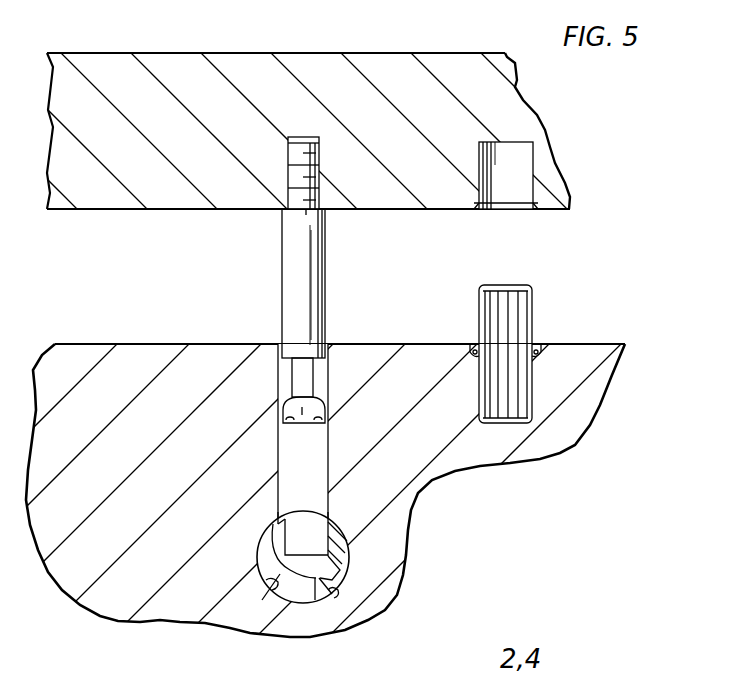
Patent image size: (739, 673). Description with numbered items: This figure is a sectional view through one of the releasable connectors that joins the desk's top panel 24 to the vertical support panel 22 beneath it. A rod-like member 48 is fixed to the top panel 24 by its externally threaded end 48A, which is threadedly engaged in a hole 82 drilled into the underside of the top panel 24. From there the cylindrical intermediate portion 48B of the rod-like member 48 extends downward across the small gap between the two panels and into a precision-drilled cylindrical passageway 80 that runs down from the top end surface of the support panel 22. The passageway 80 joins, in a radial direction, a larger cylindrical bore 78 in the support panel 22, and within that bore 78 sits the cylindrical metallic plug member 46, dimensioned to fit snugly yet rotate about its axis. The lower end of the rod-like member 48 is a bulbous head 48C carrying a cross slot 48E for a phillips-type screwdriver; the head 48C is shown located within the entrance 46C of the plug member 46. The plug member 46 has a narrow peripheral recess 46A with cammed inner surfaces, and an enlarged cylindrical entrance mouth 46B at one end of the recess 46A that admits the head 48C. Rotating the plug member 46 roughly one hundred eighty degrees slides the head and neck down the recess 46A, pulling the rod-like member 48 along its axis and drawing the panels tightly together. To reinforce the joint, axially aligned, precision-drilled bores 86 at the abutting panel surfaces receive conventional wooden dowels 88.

The support panel 22 is at (137, 350).
The top panel 24 is at (165, 185).
The plug member 46 is at (304, 573).
The recess 46A is at (267, 546).
The entrance mouth 46B is at (322, 523).
The entrance 46C is at (275, 590).
The rod-like member 48 is at (349, 308).
The threaded end 48A is at (319, 192).
The intermediate portion 48B is at (313, 262).
The head 48C is at (306, 374).
The cross slot 48E is at (300, 411).
The bore 78 is at (325, 596).
The passageway 80 is at (327, 459).
The hole 82 is at (319, 152).
The bores 86 is at (520, 190).
The dowels 88 is at (527, 305).